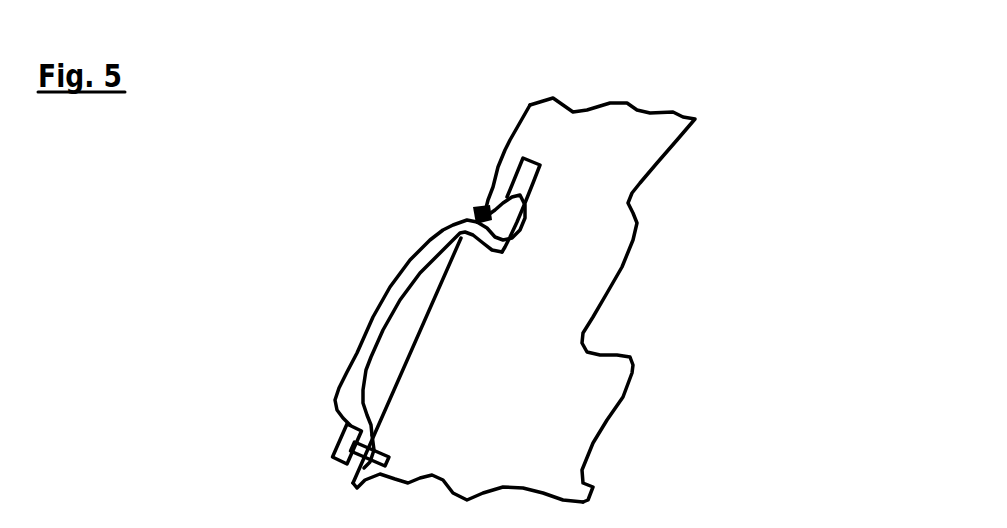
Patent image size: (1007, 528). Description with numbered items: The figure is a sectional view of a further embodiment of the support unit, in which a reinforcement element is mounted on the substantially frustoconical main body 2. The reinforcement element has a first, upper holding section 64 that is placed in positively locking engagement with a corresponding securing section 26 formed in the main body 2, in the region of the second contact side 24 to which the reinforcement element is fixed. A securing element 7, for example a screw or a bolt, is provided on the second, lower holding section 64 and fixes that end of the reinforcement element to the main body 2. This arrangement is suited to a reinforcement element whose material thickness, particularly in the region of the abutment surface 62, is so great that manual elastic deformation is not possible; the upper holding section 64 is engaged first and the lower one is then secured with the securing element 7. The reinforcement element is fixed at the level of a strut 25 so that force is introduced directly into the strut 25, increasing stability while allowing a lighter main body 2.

The main body 2 is at (551, 313).
The securing element 7 is at (303, 390).
The second contact side 24 is at (446, 181).
The strut 25 is at (669, 288).
The securing section 26 is at (659, 185).
The abutment surface 62 is at (390, 315).
The holding section 64 is at (362, 316).